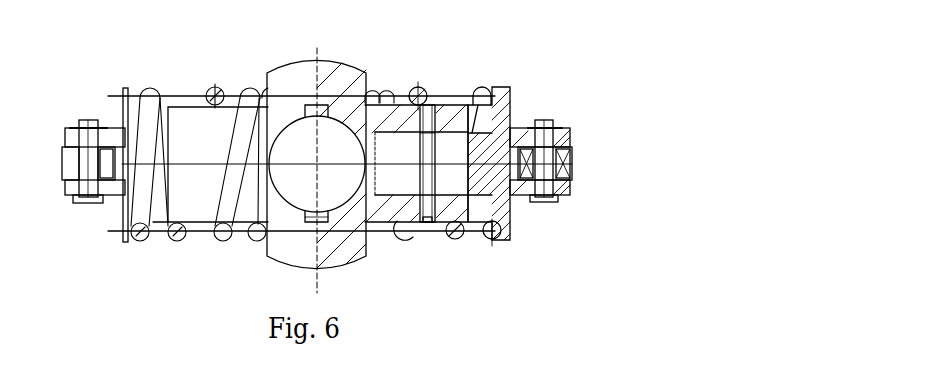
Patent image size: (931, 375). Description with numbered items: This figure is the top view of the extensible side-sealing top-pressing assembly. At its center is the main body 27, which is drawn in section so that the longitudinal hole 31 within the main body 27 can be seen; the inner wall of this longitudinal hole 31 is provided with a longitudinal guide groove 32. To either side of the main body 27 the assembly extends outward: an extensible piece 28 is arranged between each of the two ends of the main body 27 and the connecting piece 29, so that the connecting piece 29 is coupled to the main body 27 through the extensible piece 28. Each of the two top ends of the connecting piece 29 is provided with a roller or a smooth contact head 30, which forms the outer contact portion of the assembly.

The main body 27 is at (337, 91).
The extensible piece 28 is at (418, 96).
The connecting piece 29 is at (501, 124).
The roller or smooth contact head 30 is at (563, 167).
The longitudinal hole 31 is at (337, 181).
The longitudinal guide groove 32 is at (320, 217).